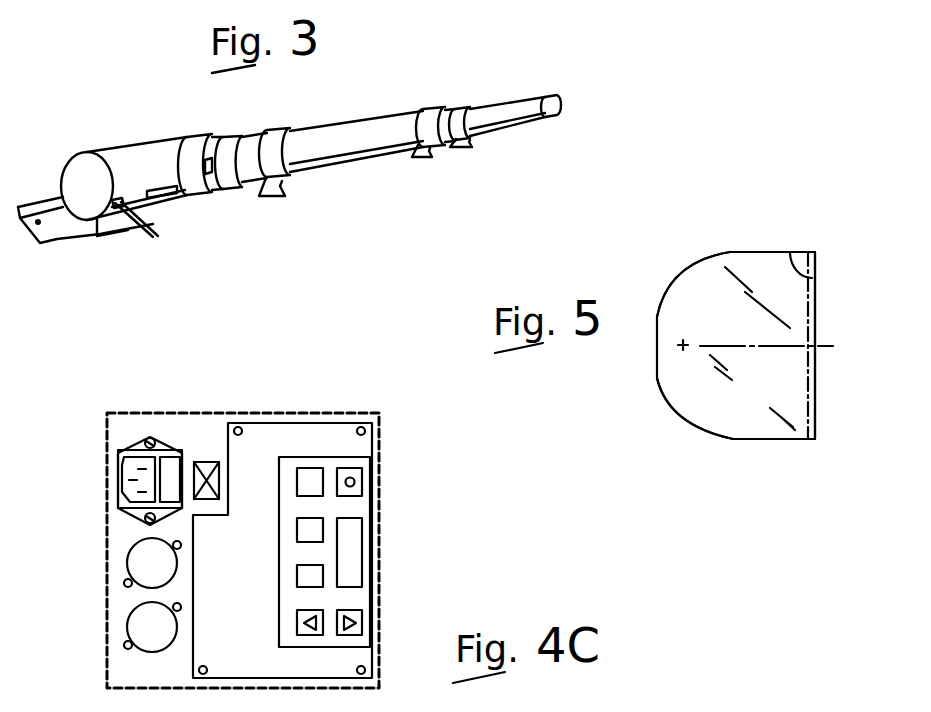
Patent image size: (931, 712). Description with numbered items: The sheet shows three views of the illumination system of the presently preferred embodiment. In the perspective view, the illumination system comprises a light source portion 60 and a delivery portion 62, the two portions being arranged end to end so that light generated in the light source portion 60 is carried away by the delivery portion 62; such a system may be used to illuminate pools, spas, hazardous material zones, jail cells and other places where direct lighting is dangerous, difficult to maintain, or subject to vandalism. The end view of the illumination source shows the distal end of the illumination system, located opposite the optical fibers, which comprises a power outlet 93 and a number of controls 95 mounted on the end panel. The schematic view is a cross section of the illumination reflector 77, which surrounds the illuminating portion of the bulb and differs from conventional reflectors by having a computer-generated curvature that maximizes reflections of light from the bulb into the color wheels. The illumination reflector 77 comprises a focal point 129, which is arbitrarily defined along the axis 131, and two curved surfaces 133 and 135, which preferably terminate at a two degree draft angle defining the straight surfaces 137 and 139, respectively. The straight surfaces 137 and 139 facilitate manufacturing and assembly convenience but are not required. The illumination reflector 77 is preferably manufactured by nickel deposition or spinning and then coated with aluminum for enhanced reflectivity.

In FIG. 3, the light source portion 60 is at (210, 127).
In FIG. 3, the delivery portion 62 is at (563, 131).
In FIG. 4C, the power outlet 93 is at (124, 455).
In FIG. 4C, the controls 95 is at (388, 457).
In FIG. 5, the illumination reflector 77 is at (656, 431).
In FIG. 5, the focal point 129 is at (683, 342).
In FIG. 5, the axis 131 is at (722, 346).
In FIG. 5, the curved surface 133 is at (700, 267).
In FIG. 5, the curved surface 135 is at (698, 418).
In FIG. 5, the straight surface 137 is at (763, 441).
In FIG. 5, the straight surface 139 is at (814, 278).